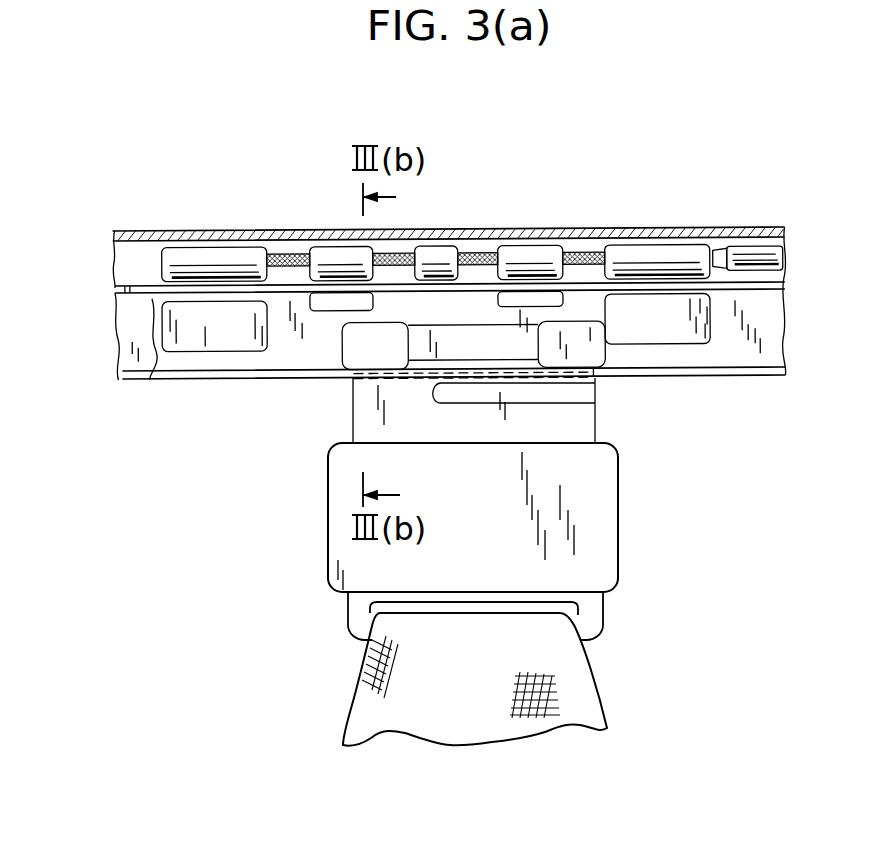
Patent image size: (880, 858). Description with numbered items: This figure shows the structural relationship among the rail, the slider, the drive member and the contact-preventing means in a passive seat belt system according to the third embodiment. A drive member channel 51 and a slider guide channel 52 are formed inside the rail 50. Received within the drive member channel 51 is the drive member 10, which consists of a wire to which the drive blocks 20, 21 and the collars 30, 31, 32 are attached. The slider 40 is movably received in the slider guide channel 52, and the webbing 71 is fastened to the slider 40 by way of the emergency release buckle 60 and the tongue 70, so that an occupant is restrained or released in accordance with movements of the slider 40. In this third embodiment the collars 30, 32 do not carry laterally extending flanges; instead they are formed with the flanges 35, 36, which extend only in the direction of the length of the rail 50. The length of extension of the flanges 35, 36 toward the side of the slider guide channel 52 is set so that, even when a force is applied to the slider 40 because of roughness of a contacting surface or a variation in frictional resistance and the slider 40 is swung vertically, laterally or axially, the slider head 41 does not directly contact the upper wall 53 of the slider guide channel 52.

The drive member 10 is at (583, 250).
The drive block 20 is at (197, 260).
The drive block 21 is at (650, 257).
The collar 30 is at (335, 262).
The collar 31 is at (440, 258).
The collar 32 is at (530, 258).
The flange 35 is at (317, 303).
The flange 36 is at (557, 300).
The slider 40 is at (590, 422).
The slider head 41 is at (418, 340).
The rail 50 is at (414, 332).
The drive member channel 51 is at (122, 261).
The slider guide channel 52 is at (128, 326).
The upper wall 53 is at (149, 380).
The emergency release buckle 60 is at (618, 530).
The tongue 70 is at (593, 608).
The webbing 71 is at (585, 675).